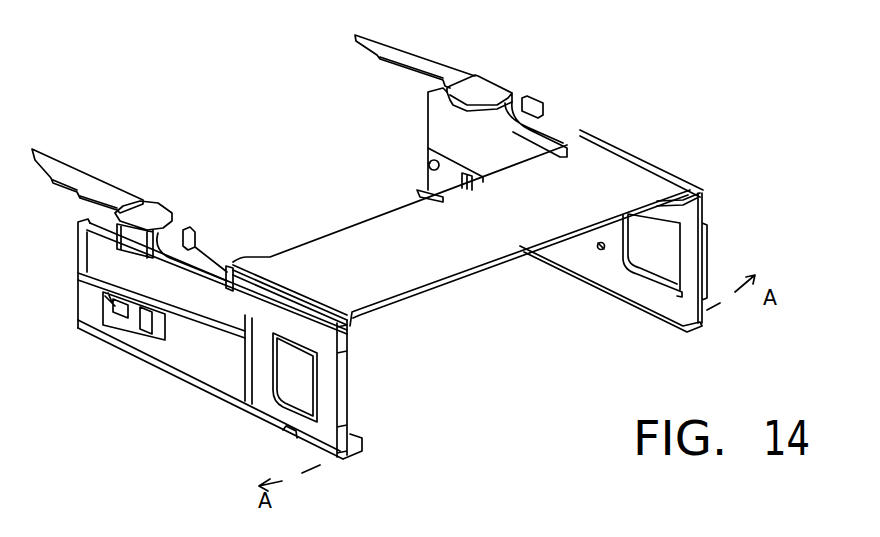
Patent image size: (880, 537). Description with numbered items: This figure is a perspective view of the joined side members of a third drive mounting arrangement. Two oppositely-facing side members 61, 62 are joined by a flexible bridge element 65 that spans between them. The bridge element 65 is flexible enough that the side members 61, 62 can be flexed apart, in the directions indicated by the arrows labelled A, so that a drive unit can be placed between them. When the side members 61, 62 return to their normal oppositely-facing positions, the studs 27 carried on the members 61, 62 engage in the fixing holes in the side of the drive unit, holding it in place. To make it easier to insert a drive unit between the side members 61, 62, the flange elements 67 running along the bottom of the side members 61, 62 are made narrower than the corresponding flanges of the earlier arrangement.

The side member 61 is at (218, 358).
The side member 62 is at (445, 122).
The flexible bridge element 65 is at (467, 245).
The flange element 67 is at (546, 352).
The stud 27 is at (603, 253).